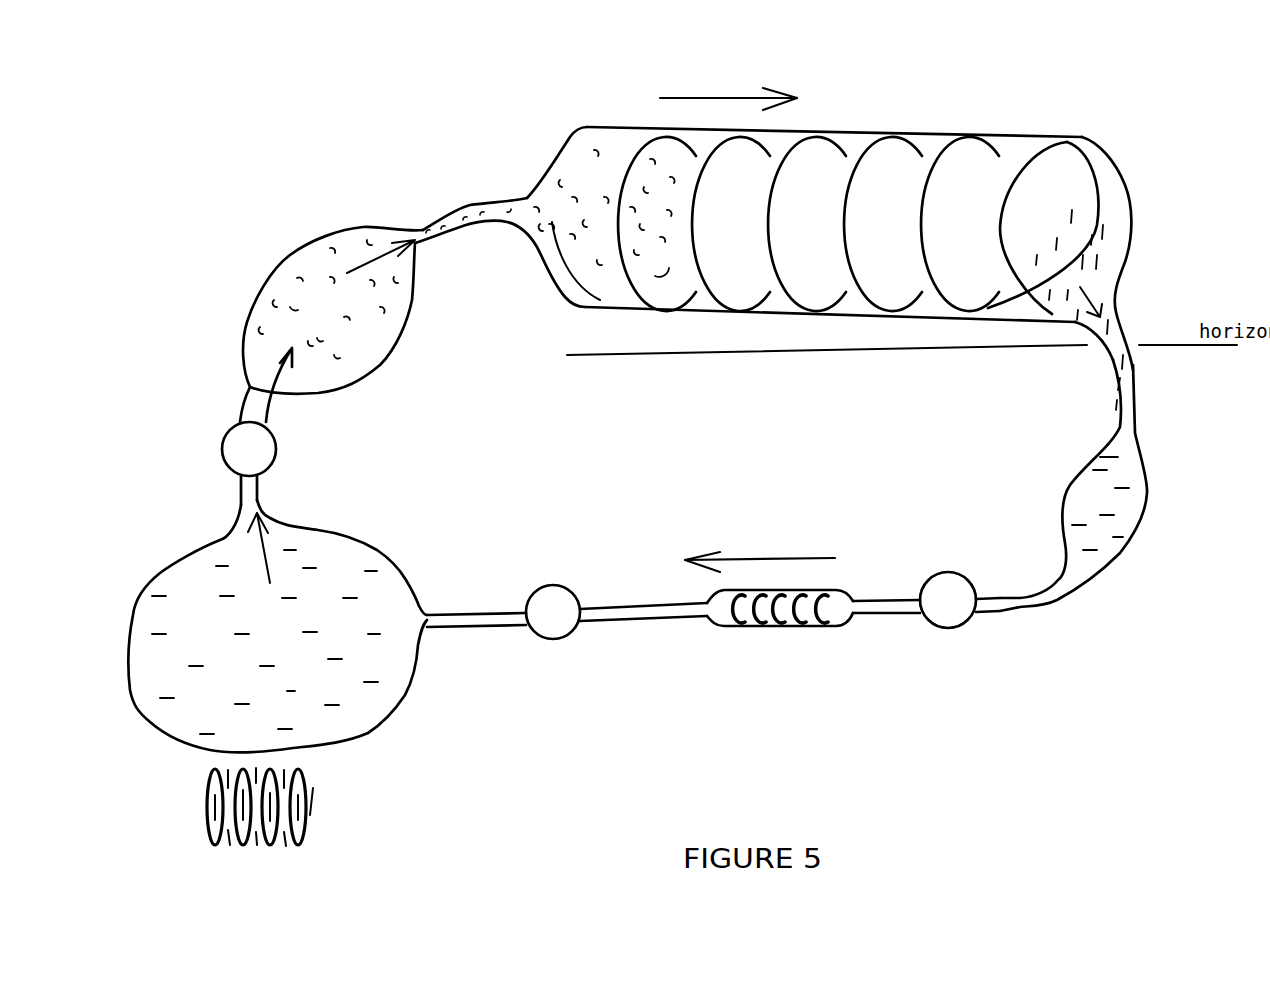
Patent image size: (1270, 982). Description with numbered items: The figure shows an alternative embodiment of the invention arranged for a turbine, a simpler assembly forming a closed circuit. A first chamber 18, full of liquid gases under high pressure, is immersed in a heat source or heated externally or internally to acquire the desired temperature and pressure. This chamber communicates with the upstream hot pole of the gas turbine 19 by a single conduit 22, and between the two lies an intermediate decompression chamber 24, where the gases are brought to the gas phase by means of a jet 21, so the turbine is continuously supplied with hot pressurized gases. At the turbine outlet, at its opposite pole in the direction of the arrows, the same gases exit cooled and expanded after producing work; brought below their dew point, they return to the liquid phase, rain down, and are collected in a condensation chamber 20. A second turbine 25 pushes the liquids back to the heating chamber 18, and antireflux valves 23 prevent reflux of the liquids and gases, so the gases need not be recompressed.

The first chamber 18 is at (277, 673).
The gas turbine 19 is at (790, 130).
The condensation chamber 20 is at (1073, 485).
The jet 21 is at (323, 392).
The conduit 22 is at (457, 206).
The antireflux valves 23 is at (599, 530).
The intermediate decompression chamber 24 is at (337, 299).
The second turbine 25 is at (817, 625).